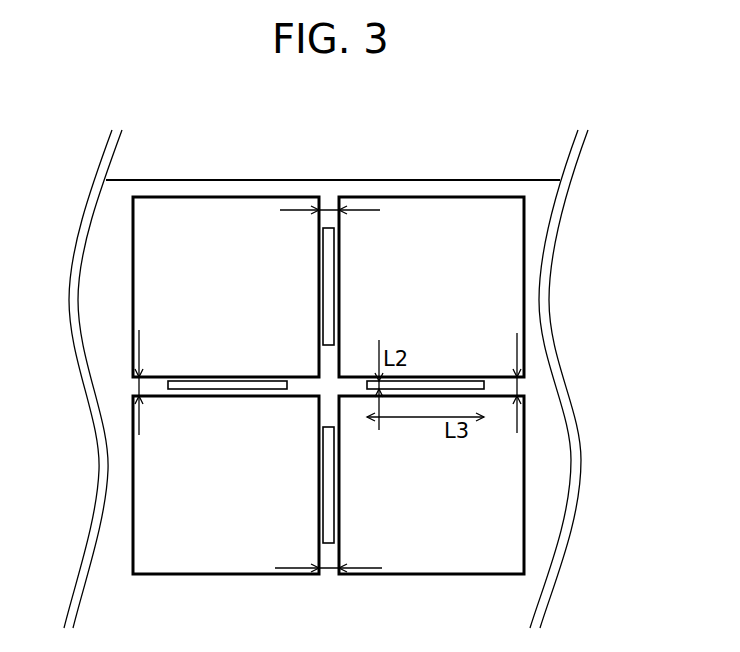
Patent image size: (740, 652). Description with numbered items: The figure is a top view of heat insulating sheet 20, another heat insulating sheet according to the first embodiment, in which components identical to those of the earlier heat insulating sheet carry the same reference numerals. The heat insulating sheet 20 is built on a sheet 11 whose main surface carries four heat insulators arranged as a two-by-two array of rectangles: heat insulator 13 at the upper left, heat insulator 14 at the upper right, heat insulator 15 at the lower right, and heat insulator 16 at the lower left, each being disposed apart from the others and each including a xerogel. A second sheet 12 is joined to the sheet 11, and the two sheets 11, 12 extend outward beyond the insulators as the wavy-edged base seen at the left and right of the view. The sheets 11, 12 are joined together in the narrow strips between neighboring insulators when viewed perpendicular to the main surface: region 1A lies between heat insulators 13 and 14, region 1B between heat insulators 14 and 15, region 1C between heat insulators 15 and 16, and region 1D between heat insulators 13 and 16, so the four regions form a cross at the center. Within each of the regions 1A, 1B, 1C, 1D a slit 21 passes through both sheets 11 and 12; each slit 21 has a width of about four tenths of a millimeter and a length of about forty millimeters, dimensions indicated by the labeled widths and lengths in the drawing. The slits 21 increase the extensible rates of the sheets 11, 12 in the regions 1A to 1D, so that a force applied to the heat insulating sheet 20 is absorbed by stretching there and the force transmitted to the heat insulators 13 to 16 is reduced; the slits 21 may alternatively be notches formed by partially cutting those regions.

The sheet 11 is at (361, 379).
The sheet 12 is at (527, 580).
The heat insulator 13 is at (173, 217).
The heat insulator 14 is at (369, 218).
The heat insulator 15 is at (380, 537).
The heat insulator 16 is at (174, 537).
The heat insulating sheet 20 is at (527, 146).
The slit 21 is at (330, 240).
The region 1A is at (327, 205).
The region 1B is at (518, 386).
The region 1C is at (328, 557).
The region 1D is at (138, 386).